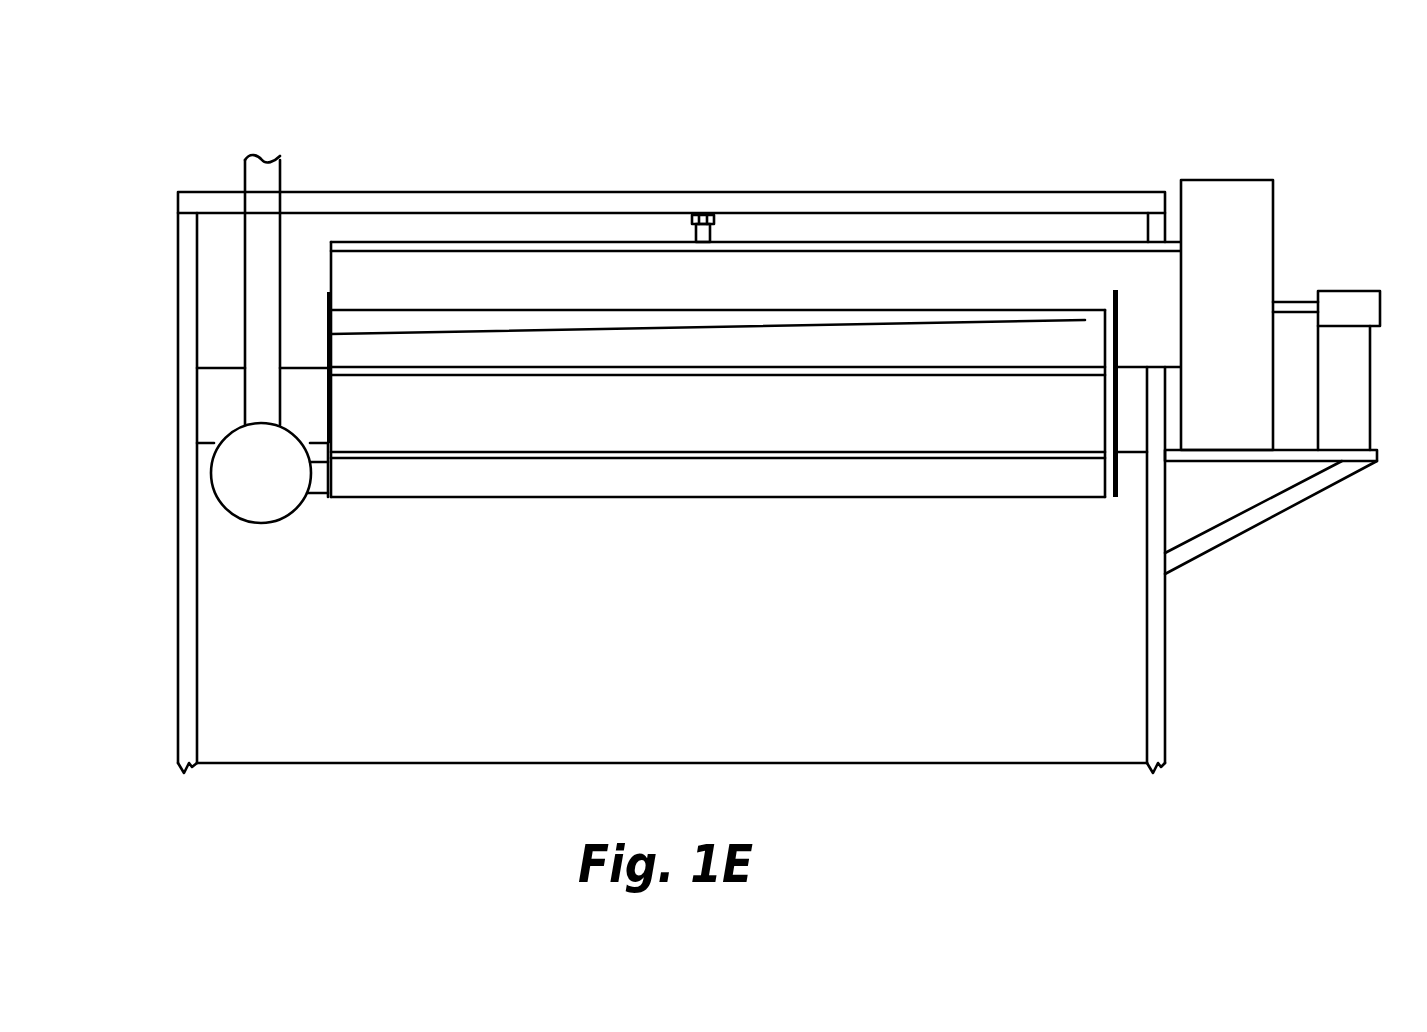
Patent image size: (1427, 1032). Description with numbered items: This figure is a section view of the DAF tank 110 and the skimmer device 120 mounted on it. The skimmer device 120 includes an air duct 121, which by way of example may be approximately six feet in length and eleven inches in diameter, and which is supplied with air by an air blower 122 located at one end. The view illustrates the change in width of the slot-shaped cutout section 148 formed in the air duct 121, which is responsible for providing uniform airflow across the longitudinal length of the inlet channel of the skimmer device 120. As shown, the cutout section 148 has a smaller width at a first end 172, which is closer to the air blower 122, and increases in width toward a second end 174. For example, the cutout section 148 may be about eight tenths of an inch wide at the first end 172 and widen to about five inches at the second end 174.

The DAF tank 110 is at (223, 635).
The skimmer device 120 is at (590, 242).
The air duct 121 is at (952, 260).
The air blower 122 is at (1242, 192).
The cutout section 148 is at (448, 320).
The first end 172 is at (1100, 310).
The second end 174 is at (330, 292).